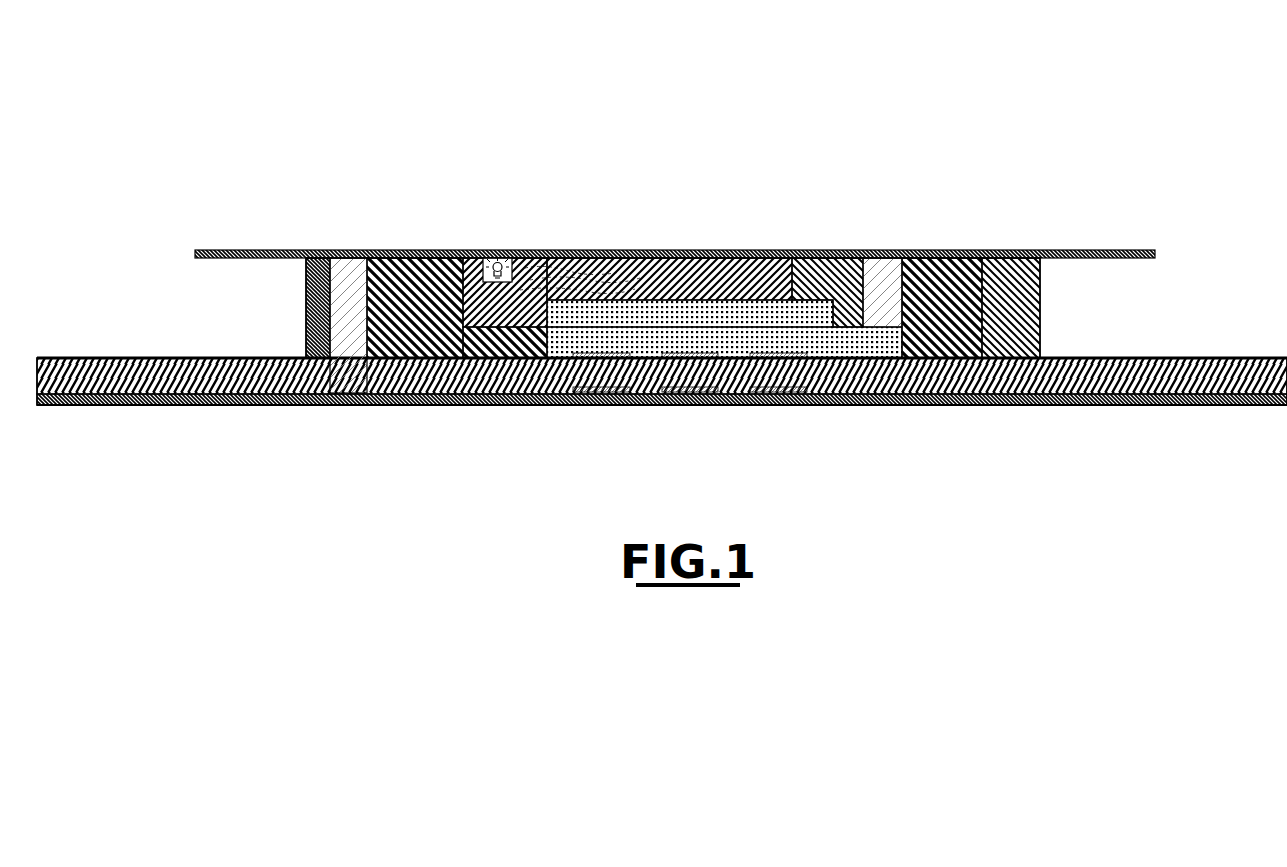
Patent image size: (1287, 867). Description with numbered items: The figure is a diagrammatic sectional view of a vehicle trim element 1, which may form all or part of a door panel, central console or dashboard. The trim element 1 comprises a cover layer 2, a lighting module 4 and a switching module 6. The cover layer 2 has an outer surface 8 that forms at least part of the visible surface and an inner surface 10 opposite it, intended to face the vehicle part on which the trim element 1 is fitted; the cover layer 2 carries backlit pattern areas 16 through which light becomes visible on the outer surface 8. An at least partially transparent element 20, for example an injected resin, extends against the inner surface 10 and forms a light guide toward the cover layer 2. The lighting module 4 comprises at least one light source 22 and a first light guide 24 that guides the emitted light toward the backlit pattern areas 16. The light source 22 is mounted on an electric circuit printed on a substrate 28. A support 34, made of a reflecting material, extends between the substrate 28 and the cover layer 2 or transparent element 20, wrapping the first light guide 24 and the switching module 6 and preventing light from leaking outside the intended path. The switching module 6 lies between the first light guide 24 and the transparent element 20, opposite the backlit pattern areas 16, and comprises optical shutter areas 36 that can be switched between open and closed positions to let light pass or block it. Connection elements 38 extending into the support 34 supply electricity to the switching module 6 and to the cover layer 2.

The vehicle trim element 1 is at (1158, 145).
The cover layer 2 is at (1010, 404).
The lighting module 4 is at (465, 252).
The switching module 6 is at (767, 342).
The outer surface 8 is at (1122, 405).
The inner surface 10 is at (1258, 365).
The backlit pattern areas 16 is at (673, 404).
The at least partially transparent element 20 is at (1132, 372).
The light source 22 is at (503, 257).
The first light guide 24 is at (665, 256).
The substrate 28 is at (899, 257).
The support 34 is at (982, 303).
The optical shutter areas 36 is at (697, 353).
The connection element 38 is at (348, 276).